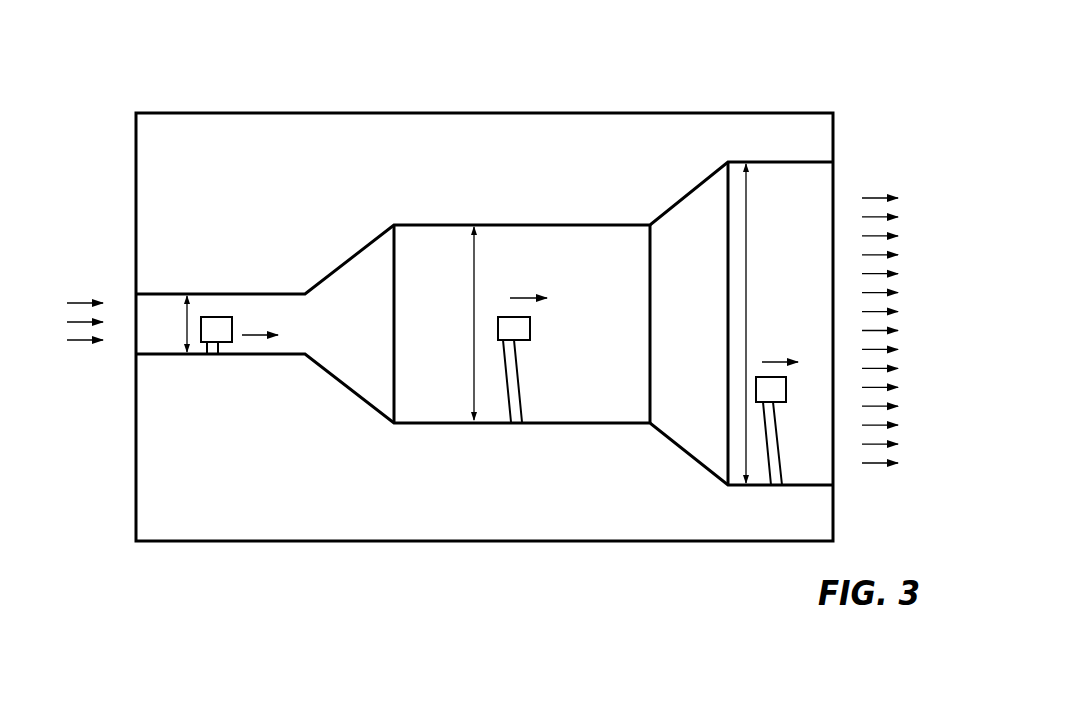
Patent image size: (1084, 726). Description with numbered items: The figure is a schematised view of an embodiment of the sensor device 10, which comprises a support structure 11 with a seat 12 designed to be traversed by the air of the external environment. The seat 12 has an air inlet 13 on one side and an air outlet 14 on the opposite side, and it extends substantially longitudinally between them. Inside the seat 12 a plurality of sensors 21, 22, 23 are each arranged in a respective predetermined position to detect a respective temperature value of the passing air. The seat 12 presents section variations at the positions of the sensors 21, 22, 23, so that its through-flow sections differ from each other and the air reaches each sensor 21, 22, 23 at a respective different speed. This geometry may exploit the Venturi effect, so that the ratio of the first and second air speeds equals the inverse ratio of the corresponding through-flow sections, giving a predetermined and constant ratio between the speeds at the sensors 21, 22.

The sensor device 10 is at (858, 72).
The support structure 11 is at (272, 101).
The seat 12 is at (630, 277).
The air inlet 13 is at (131, 292).
The air outlet 14 is at (843, 174).
The sensor 21 is at (211, 327).
The sensor 22 is at (511, 334).
The sensor 23 is at (768, 393).